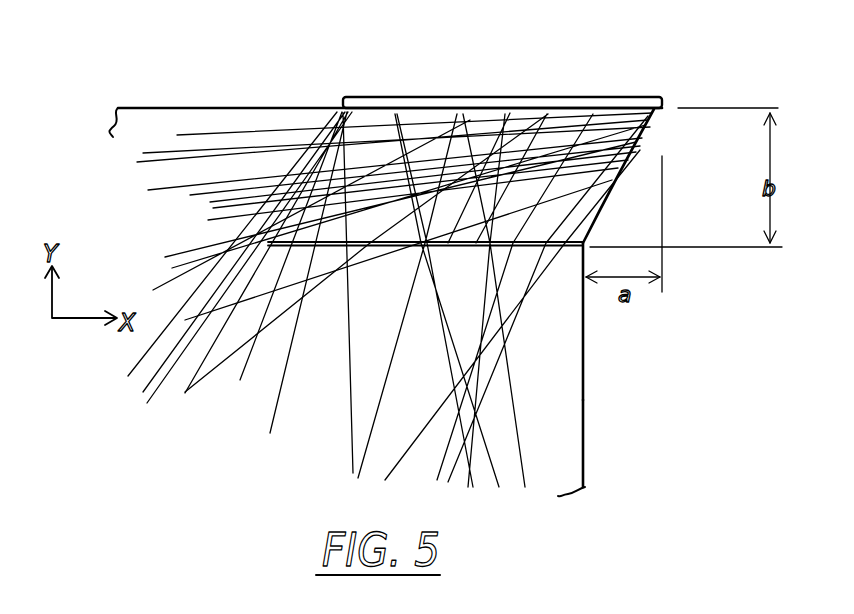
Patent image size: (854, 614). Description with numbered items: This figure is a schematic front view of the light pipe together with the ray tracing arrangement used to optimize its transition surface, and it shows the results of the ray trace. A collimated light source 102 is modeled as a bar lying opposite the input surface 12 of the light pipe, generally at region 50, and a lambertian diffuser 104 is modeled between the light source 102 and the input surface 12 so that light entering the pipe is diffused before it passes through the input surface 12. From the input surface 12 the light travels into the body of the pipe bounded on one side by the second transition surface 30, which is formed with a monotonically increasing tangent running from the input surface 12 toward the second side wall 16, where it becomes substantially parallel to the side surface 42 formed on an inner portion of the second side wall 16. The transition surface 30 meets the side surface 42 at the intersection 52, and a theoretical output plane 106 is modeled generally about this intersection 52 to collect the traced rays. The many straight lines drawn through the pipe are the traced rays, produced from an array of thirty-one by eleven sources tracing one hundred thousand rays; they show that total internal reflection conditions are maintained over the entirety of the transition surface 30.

The input surface 12 is at (243, 107).
The collimated light source 102 is at (650, 93).
The lambertian diffuser 104 is at (485, 112).
The region 50 is at (626, 30).
The second transition surface 30 is at (608, 168).
The intersection 52 is at (587, 243).
The side surface 42 is at (587, 322).
The second side wall 16 is at (587, 433).
The theoretical output plane 106 is at (390, 299).